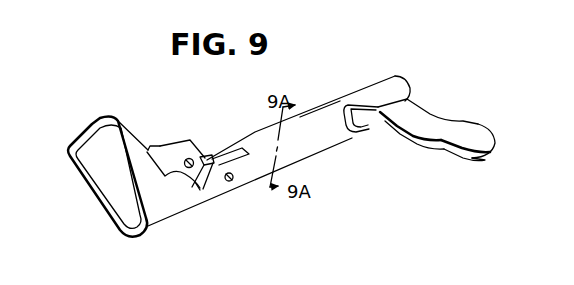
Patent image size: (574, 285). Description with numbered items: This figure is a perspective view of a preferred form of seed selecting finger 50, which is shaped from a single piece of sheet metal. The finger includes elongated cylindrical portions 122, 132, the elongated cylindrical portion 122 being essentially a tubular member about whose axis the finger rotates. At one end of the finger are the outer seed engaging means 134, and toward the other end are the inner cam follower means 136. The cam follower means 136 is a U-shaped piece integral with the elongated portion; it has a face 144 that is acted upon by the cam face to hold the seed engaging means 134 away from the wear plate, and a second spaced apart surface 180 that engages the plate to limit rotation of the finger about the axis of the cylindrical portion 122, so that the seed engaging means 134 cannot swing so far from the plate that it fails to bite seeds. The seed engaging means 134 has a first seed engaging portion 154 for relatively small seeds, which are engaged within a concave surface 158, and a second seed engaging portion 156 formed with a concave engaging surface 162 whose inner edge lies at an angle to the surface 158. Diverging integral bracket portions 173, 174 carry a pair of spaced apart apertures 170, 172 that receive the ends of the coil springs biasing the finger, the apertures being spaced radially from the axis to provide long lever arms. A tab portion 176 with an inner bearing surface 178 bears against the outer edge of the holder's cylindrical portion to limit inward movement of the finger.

The seed selecting finger 50 is at (382, 71).
The elongated cylindrical portion 122 is at (317, 112).
The elongated cylindrical portion 132 is at (182, 194).
The seed engaging means 134 is at (468, 119).
The cam follower means 136 is at (85, 209).
The face of the cam follower 144 is at (105, 122).
The first seed engaging portion 154 is at (414, 113).
The second seed engaging portion 156 is at (481, 143).
The concave surface 158 is at (393, 134).
The concave engaging surface 162 is at (437, 151).
The aperture 170 is at (232, 182).
The aperture 172 is at (189, 158).
The bracket portion 173 is at (245, 147).
The bracket portion 174 is at (150, 150).
The tab portion 176 is at (208, 156).
The inner bearing surface 178 is at (203, 190).
The spaced apart surface 180 is at (88, 165).